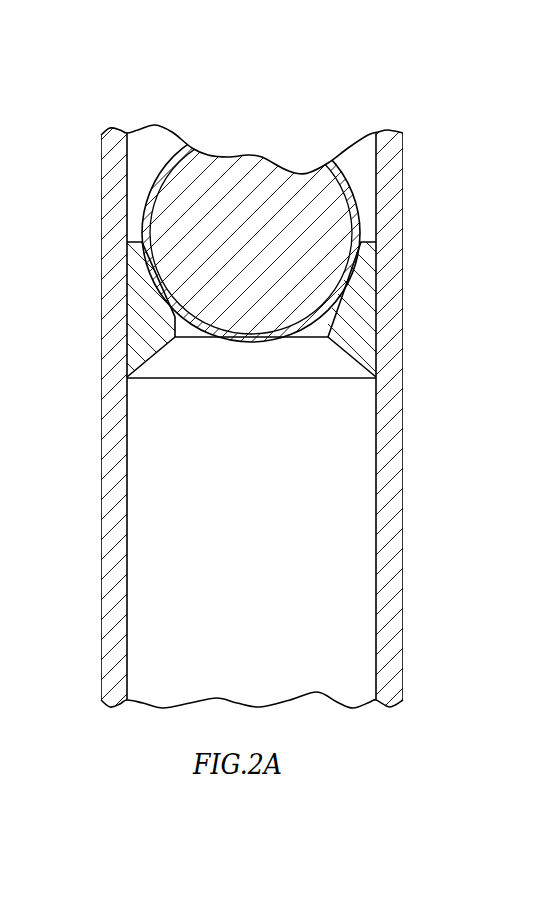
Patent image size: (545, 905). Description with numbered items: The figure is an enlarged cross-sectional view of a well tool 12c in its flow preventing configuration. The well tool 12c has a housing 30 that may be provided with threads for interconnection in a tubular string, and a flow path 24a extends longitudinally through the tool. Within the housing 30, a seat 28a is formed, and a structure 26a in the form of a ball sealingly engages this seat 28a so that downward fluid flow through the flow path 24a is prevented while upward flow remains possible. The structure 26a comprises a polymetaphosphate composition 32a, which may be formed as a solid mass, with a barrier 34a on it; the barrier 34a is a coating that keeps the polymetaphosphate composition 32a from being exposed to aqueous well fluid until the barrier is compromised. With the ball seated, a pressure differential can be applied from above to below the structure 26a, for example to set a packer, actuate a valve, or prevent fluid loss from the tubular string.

The well tool 12c is at (450, 116).
The flow path 24a is at (230, 463).
The structure 26a is at (266, 348).
The seat 28a is at (348, 289).
The housing 30 is at (403, 510).
The polymetaphosphate composition 32a is at (243, 157).
The barrier 34a is at (170, 168).